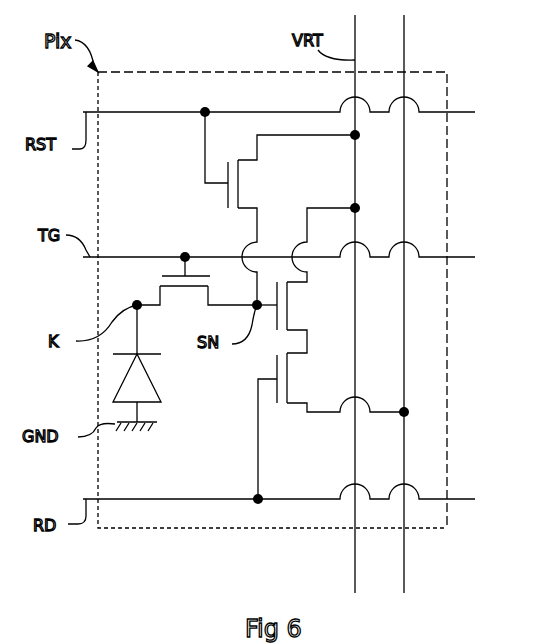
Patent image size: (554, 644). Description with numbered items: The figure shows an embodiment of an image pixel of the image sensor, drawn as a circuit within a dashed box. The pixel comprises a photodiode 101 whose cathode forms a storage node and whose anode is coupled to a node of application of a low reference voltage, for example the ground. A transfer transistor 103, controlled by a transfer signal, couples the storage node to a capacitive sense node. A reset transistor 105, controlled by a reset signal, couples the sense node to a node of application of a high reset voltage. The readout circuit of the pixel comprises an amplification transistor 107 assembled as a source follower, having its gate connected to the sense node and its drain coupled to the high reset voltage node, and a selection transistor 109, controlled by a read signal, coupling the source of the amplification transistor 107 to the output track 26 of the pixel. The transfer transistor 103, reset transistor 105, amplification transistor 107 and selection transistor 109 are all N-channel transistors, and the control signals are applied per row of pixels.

The output track 26 is at (404, 60).
The photodiode 101 is at (117, 388).
The transfer transistor 103 is at (160, 292).
The reset transistor 105 is at (228, 200).
The amplification transistor 107 is at (290, 328).
The selection transistor 109 is at (292, 405).